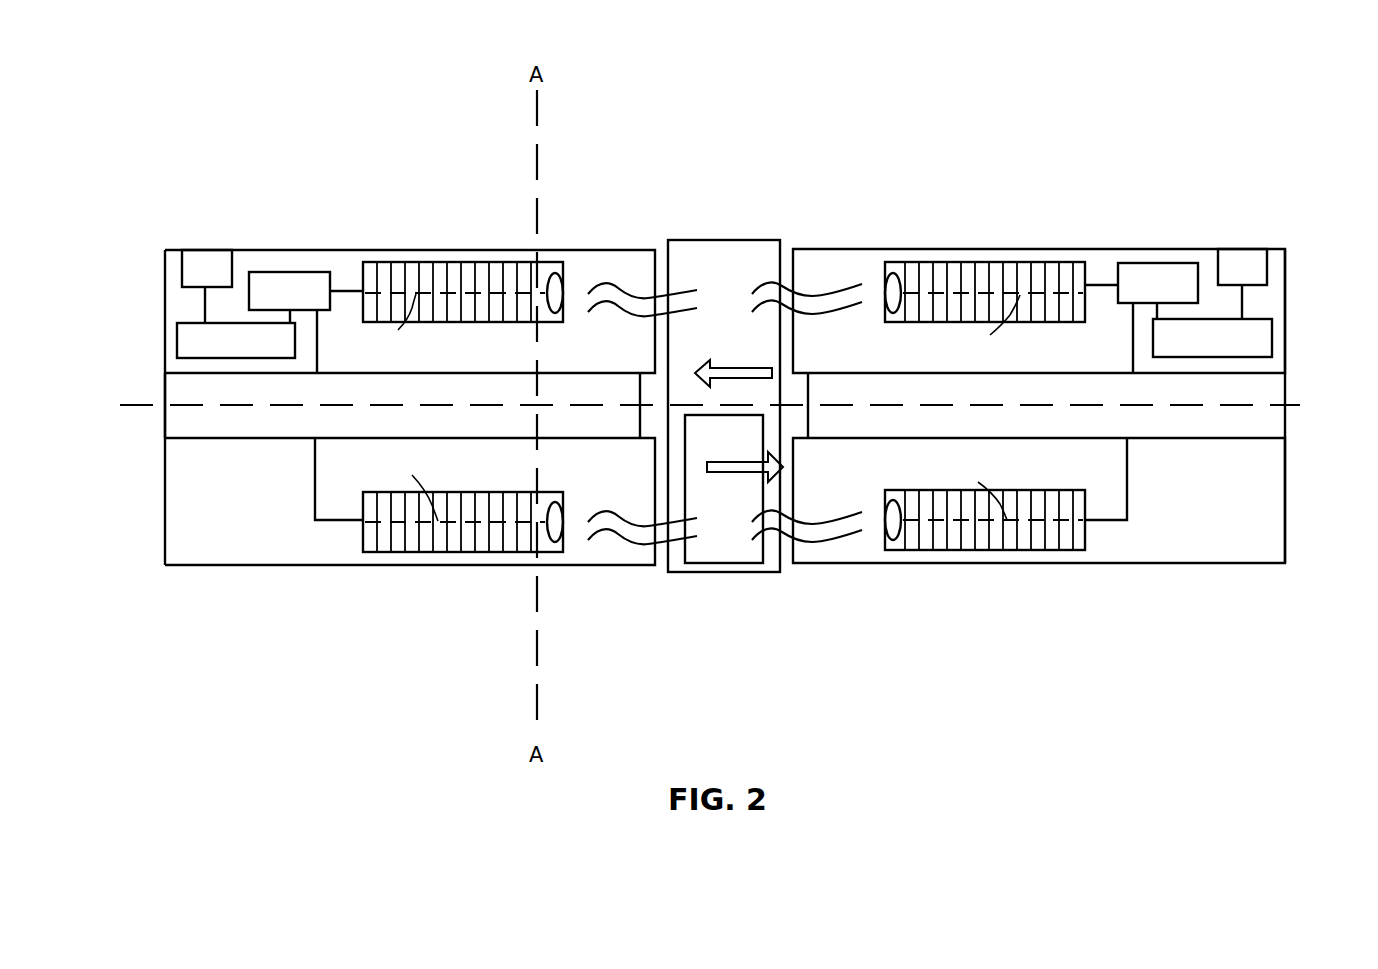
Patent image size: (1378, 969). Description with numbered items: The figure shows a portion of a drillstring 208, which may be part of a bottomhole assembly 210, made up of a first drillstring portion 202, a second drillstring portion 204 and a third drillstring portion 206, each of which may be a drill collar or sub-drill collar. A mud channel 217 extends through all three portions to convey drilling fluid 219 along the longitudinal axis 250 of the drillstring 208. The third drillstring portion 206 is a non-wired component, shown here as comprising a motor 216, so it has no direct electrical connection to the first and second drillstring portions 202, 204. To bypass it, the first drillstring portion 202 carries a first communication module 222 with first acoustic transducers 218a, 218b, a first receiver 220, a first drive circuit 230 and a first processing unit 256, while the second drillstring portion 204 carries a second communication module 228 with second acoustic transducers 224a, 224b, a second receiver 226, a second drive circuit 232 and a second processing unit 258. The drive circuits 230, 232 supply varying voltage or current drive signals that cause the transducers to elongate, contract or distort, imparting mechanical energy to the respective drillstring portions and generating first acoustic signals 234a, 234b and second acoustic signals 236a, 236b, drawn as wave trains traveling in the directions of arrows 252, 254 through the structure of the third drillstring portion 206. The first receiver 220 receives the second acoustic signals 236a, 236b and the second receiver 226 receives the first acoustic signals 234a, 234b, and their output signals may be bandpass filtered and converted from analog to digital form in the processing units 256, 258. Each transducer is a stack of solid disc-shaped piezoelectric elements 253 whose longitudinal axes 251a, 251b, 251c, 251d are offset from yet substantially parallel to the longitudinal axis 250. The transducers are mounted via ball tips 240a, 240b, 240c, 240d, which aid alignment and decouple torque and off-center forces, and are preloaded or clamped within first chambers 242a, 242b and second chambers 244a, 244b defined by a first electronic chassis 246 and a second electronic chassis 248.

The first drillstring portion 202 is at (296, 564).
The second drillstring portion 204 is at (822, 564).
The third drillstring portion 206 is at (760, 572).
The drillstring 208 is at (300, 138).
The bottomhole assembly 210 is at (619, 72).
The motor 216 is at (693, 572).
The mud channel 217 is at (165, 425).
The first acoustic transducer 218a is at (480, 263).
The first acoustic transducer 218b is at (482, 554).
The drilling fluid 219 is at (1282, 416).
The first receiver 220 is at (206, 251).
The first communication module 222 is at (298, 229).
The second acoustic transducer 224a is at (965, 268).
The second acoustic transducer 224b is at (965, 547).
The second receiver 226 is at (1268, 269).
The second communication module 228 is at (1178, 597).
The first drive circuit 230 is at (290, 272).
The second drive circuit 232 is at (1161, 262).
The first acoustic signal 234a is at (676, 303).
The first acoustic signal 234b is at (684, 521).
The second acoustic signal 236a is at (832, 318).
The second acoustic signal 236b is at (818, 512).
The ball tip 240a is at (559, 253).
The ball tip 240b is at (559, 502).
The ball tip 240c is at (895, 274).
The ball tip 240d is at (893, 540).
The first chamber 242a is at (370, 263).
The first chamber 242b is at (377, 564).
The second chamber 244a is at (1045, 262).
The second chamber 244b is at (1047, 560).
The first electronic chassis 246 is at (215, 564).
The second electronic chassis 248 is at (1228, 564).
The longitudinal axis of the drillstring 250 is at (162, 402).
The longitudinal axis of acoustic transducer 251a is at (391, 325).
The longitudinal axis of acoustic transducer 251b is at (408, 487).
The longitudinal axis of acoustic transducer 251c is at (991, 326).
The longitudinal axis of acoustic transducer 251d is at (977, 488).
The arrow 252 is at (706, 461).
The solid disc-shaped elements 253 is at (487, 323).
The arrow 254 is at (770, 368).
The first processing unit 256 is at (165, 320).
The second processing unit 258 is at (1272, 332).